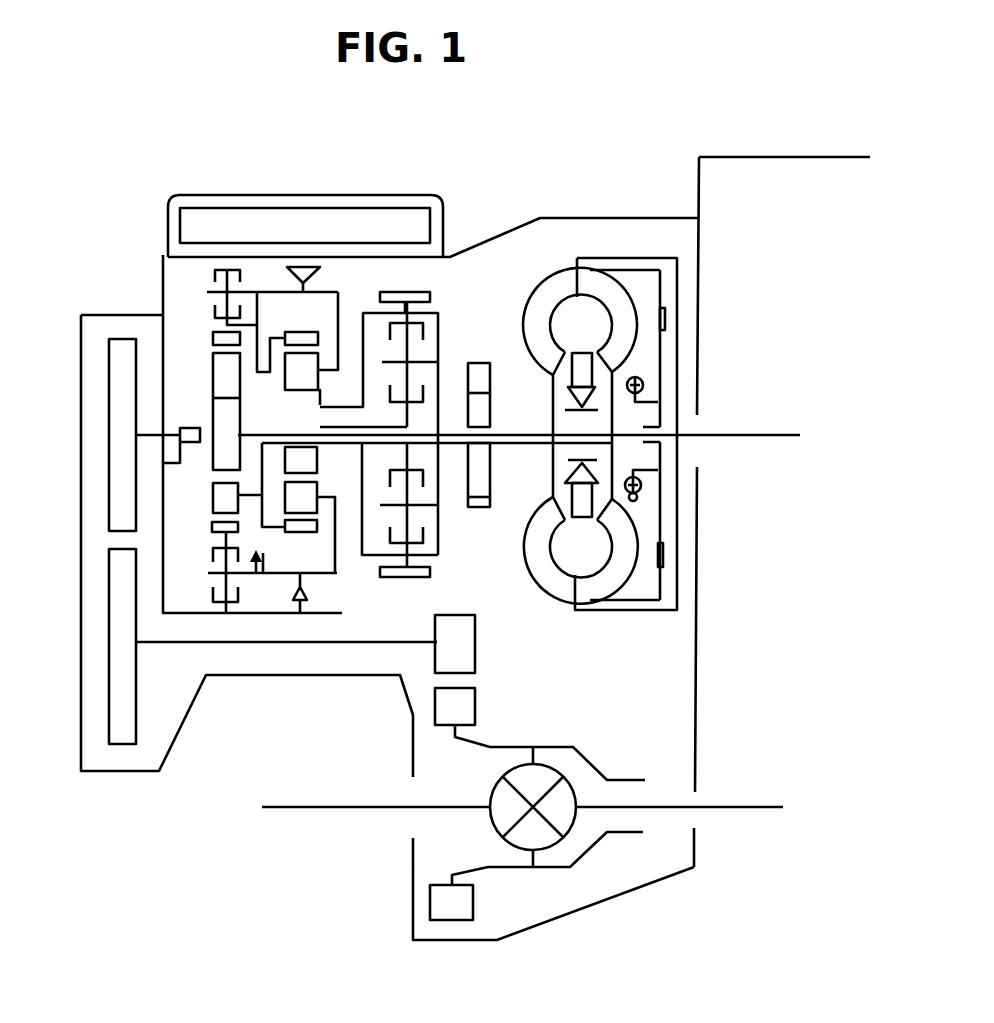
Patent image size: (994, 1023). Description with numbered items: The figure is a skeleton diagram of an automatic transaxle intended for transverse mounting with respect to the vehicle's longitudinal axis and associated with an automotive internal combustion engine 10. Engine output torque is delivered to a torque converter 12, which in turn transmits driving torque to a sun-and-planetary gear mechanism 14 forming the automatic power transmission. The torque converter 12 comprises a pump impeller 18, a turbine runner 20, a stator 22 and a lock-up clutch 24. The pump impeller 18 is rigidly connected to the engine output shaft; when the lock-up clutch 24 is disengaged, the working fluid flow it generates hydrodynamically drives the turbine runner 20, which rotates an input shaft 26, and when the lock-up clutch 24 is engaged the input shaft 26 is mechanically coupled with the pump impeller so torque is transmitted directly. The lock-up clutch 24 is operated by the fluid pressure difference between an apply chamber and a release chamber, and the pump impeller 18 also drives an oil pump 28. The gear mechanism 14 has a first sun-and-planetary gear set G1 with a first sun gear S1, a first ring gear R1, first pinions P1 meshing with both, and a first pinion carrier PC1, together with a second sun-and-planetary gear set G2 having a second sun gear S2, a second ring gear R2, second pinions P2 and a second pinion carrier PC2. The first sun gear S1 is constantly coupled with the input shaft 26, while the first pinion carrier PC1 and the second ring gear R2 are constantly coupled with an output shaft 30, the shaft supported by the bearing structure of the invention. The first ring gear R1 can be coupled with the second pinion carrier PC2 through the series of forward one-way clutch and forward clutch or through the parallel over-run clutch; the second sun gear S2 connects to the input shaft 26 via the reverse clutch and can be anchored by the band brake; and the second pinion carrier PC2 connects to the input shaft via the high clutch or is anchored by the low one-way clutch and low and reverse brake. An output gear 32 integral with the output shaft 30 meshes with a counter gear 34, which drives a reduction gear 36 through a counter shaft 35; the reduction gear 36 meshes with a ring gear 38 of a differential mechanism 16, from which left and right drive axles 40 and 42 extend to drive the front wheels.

The engine 10 is at (740, 157).
The torque converter 12 is at (597, 243).
The sun-and-planetary gear mechanism 14 is at (258, 305).
The differential mechanism 16 is at (554, 760).
The pump impeller 18 is at (556, 290).
The turbine runner 20 is at (608, 290).
The stator 22 is at (580, 363).
The lock-up clutch 24 is at (662, 350).
The input shaft 26 is at (510, 433).
The oil pump 28 is at (473, 507).
The output shaft 30 is at (165, 433).
The output gear 32 is at (112, 456).
The counter gear 34 is at (112, 648).
The counter shaft 35 is at (393, 640).
The reduction gear 36 is at (478, 627).
The ring gear 38 is at (452, 920).
The left drive axle 40 is at (367, 813).
The right drive axle 42 is at (757, 813).
The first sun-and-planetary gear set G1 is at (208, 344).
The second sun-and-planetary gear set G2 is at (297, 318).
The first sun gear S1 is at (218, 456).
The first pinions P1 is at (218, 492).
The first pinion carrier PC1 is at (212, 527).
The first ring gear R1 is at (212, 538).
The second sun gear S2 is at (314, 462).
The second pinions P2 is at (308, 500).
The second pinion carrier PC2 is at (270, 532).
The second ring gear R2 is at (313, 533).